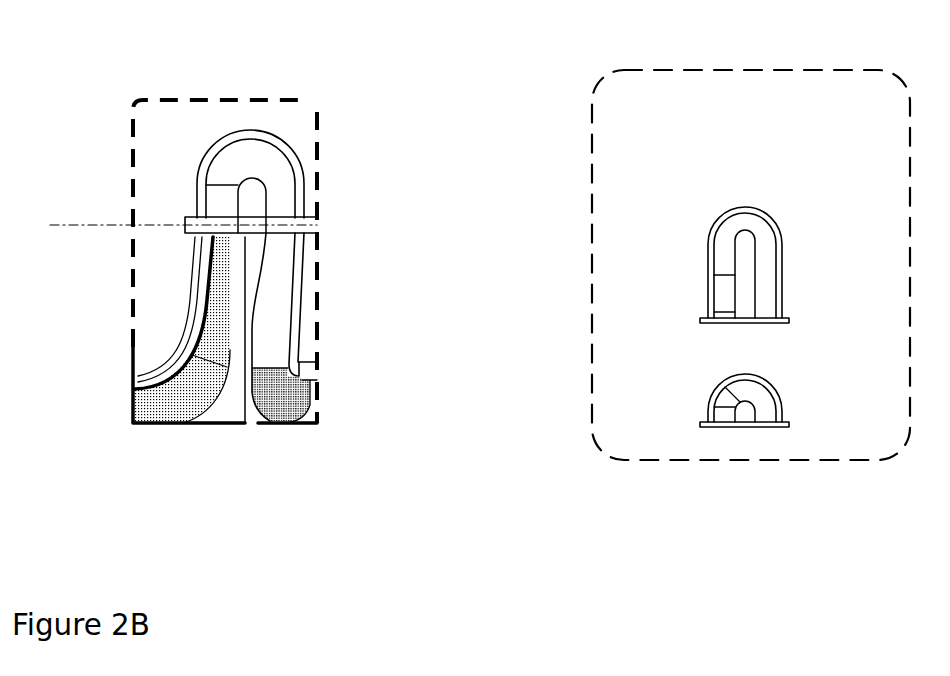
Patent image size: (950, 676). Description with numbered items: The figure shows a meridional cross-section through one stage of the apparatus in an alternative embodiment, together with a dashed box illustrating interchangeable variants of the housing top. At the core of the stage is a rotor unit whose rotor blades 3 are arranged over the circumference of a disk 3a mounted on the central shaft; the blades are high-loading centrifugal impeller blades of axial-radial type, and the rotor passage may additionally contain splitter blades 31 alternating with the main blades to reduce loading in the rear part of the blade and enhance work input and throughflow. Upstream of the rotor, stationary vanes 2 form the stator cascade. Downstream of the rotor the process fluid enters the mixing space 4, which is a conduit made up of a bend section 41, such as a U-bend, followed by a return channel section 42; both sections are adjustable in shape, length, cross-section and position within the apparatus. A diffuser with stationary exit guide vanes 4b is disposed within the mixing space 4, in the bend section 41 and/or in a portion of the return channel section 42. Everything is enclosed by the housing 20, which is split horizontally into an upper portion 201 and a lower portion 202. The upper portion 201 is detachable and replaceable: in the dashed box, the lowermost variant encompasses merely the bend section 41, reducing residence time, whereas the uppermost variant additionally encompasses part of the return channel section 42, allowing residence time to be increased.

The stationary vanes 2 is at (287, 400).
The rotor blades 3 is at (182, 395).
The disk 3a is at (232, 403).
The splitter blades 31 is at (210, 337).
The mixing space 4 is at (272, 168).
The bend section 41 is at (745, 223).
The return channel section 42 is at (276, 295).
The diffuser vanes 4b is at (222, 207).
The housing 20 is at (236, 128).
The upper portion 201 is at (158, 192).
The lower portion 202 is at (157, 288).